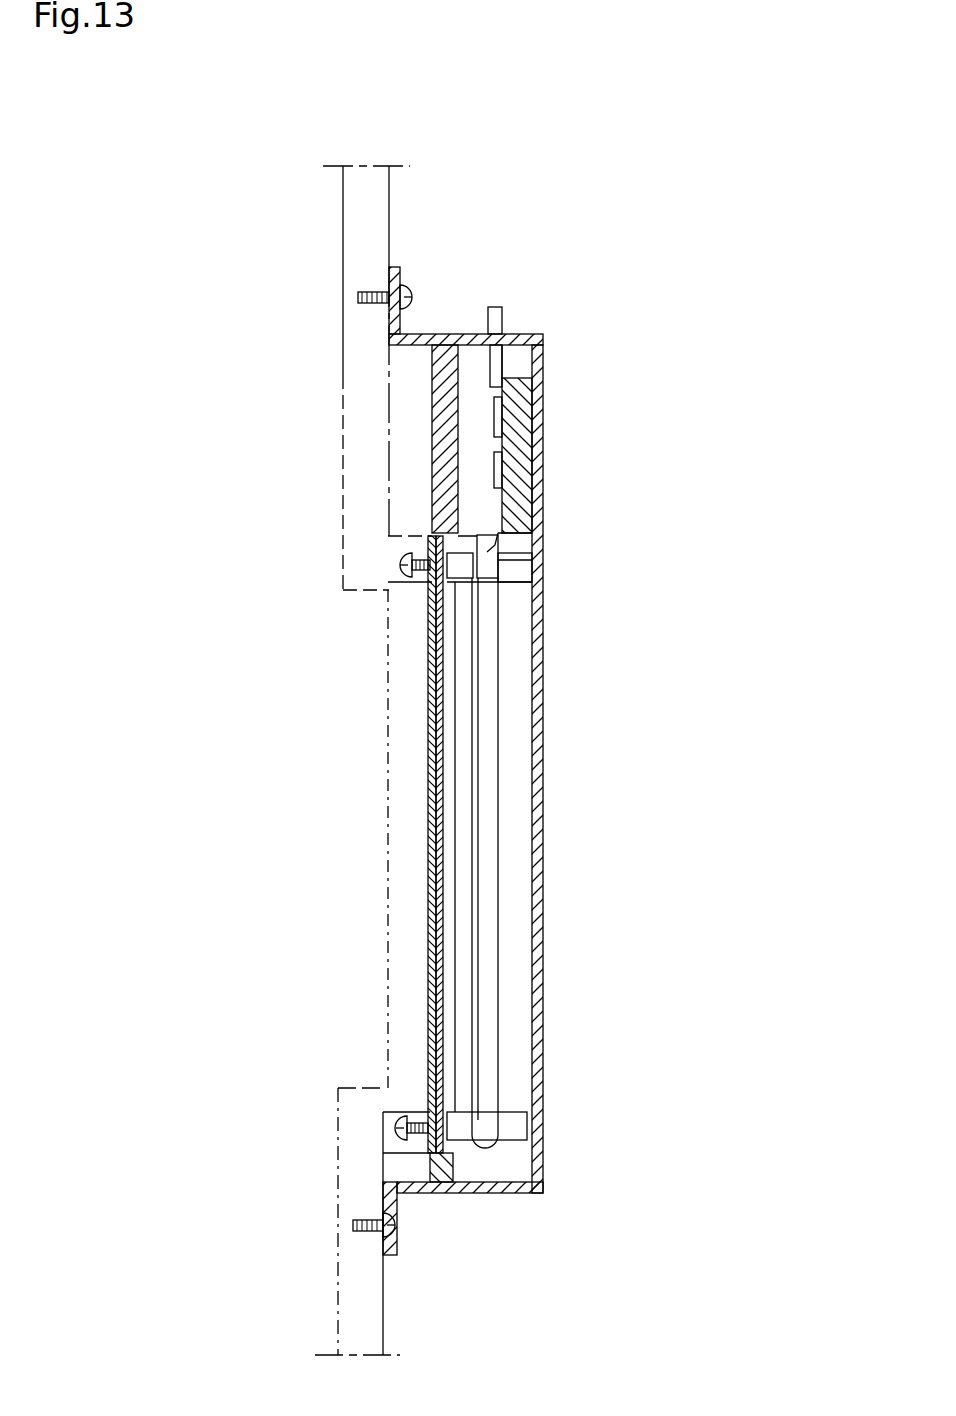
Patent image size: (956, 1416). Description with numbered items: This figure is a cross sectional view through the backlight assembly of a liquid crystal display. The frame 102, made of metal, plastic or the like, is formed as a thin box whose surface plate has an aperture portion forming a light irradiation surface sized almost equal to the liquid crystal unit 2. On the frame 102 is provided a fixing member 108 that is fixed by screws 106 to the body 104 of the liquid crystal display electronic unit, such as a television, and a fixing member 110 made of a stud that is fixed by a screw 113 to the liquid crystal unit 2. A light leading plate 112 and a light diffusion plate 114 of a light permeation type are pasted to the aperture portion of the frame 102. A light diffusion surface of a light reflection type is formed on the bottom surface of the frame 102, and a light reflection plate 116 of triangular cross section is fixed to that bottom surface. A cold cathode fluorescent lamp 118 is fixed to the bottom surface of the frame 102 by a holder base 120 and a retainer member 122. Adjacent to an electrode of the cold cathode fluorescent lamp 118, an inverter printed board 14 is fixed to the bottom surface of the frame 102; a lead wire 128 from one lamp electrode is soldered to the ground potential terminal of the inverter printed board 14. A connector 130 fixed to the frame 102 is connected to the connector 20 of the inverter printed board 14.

The liquid crystal unit 2 is at (392, 803).
The body 104 is at (343, 333).
The fixing member 108 is at (400, 268).
The screws 106 is at (412, 297).
The connector 130 is at (502, 310).
The connector 20 is at (503, 363).
The inverter printed board 14 is at (520, 421).
The frame 102 is at (535, 722).
The lead wire 128 is at (492, 530).
The retainer member 122 is at (490, 548).
The holder base 120 is at (515, 566).
The fixing member 110 is at (455, 574).
The screw 113 is at (388, 565).
The light diffusion plate 114 is at (428, 922).
The light leading plate 112 is at (440, 985).
The cold cathode fluorescent lamp 118 is at (490, 800).
The light reflection plate 116 is at (510, 1030).